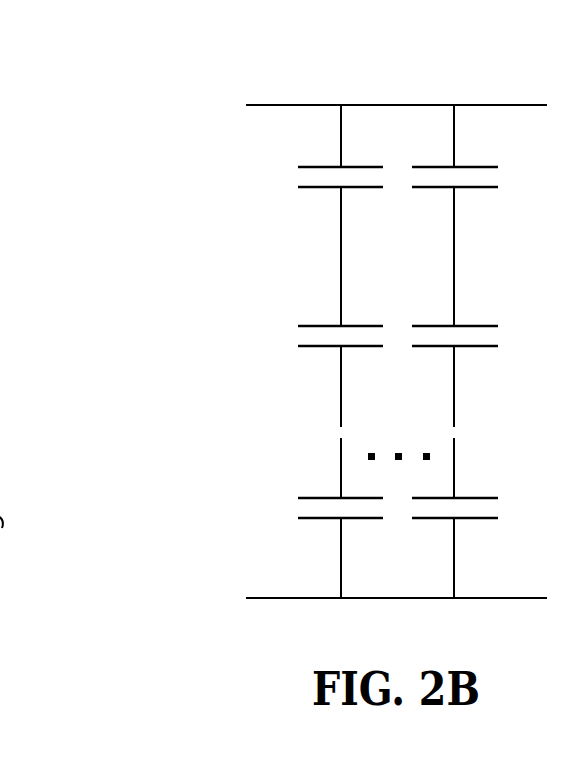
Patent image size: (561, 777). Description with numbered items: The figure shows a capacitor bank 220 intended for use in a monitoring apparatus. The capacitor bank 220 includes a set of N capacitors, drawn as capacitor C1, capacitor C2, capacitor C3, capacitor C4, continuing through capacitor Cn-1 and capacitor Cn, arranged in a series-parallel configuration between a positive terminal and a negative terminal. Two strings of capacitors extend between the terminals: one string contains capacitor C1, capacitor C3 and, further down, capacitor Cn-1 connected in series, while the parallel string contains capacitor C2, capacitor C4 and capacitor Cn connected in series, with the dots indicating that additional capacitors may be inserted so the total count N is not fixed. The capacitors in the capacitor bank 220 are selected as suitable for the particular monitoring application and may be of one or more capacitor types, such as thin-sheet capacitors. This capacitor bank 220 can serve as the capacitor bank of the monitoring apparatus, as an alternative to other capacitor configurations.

The capacitor bank 220 is at (289, 63).
The capacitor C1 is at (340, 211).
The capacitor C2 is at (455, 211).
The capacitor C3 is at (340, 371).
The capacitor C4 is at (455, 371).
The capacitor Cn-1 is at (344, 542).
The capacitor Cn is at (455, 542).